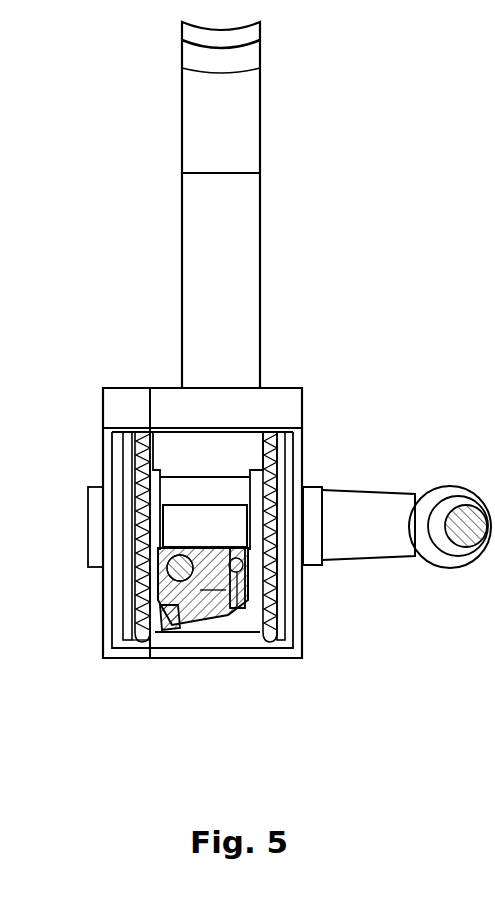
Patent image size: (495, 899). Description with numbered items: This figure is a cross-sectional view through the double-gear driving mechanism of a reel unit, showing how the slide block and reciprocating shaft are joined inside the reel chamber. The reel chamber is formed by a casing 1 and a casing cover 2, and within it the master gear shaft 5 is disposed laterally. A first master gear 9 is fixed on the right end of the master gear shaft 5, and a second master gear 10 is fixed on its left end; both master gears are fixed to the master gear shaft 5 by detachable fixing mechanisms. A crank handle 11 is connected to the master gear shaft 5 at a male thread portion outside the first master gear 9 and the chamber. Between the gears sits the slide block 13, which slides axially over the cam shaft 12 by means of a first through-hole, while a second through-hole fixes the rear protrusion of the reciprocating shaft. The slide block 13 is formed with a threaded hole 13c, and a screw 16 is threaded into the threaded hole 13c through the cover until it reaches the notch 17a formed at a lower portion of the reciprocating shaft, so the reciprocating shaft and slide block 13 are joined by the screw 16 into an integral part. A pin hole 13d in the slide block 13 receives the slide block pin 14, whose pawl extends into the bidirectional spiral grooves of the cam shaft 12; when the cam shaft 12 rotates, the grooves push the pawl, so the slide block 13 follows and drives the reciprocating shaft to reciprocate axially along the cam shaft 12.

The casing 1 is at (272, 398).
The casing cover 2 is at (121, 400).
The master gear shaft 5 is at (185, 525).
The first master gear 9 is at (283, 452).
The second master gear 10 is at (108, 438).
The crank handle 11 is at (378, 545).
The cam shaft 12 is at (160, 562).
The slide block 13 is at (198, 545).
The threaded hole 13c is at (210, 600).
The pin hole 13d is at (172, 625).
The slide block pin 14 is at (150, 622).
The screw 16 is at (242, 615).
The notch 17a is at (232, 556).